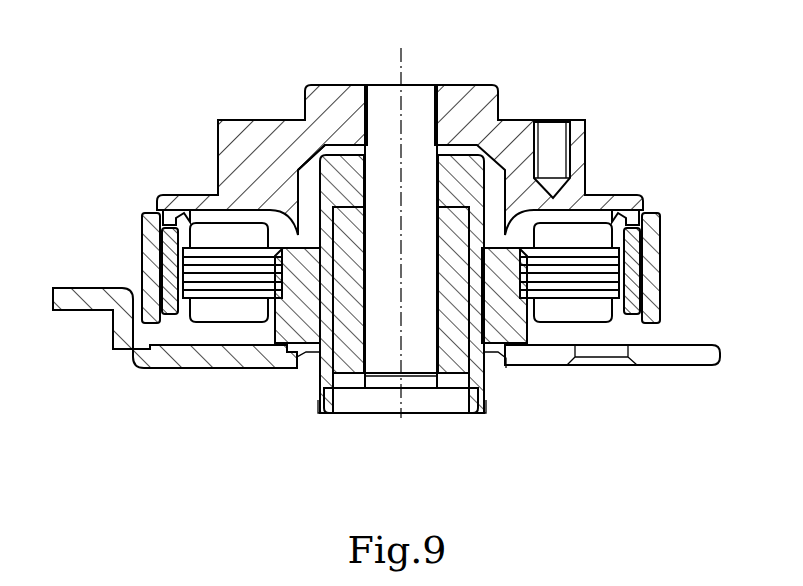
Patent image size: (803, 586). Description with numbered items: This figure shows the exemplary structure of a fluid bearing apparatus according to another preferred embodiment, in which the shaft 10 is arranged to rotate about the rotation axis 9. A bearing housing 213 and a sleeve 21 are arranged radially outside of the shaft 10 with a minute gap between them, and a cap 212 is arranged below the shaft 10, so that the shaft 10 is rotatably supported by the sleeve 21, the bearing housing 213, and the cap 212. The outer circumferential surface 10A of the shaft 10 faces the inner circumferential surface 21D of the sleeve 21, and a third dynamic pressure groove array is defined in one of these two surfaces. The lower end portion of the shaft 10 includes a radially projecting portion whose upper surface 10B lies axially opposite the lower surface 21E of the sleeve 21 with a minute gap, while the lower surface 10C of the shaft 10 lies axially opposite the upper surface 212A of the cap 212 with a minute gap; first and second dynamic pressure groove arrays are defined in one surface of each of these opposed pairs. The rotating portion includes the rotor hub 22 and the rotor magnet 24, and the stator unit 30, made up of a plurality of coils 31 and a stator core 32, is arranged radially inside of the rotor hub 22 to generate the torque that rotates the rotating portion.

The rotation axis 9 is at (411, 48).
The shaft 10 is at (381, 86).
The outer circumferential surface 10A is at (372, 252).
The upper surface 10B is at (447, 390).
The lower surface 10C is at (381, 390).
The sleeve 21 is at (294, 368).
The inner circumferential surface 21D is at (323, 400).
The lower surface 21E is at (483, 413).
The cap 212 is at (325, 413).
The upper surface 212A is at (362, 375).
The bearing housing 213 is at (313, 144).
The rotor hub 22 is at (218, 121).
The rotor magnet 24 is at (150, 244).
The stator unit 30 is at (184, 331).
The coils 31 is at (213, 247).
The stator core 32 is at (159, 196).